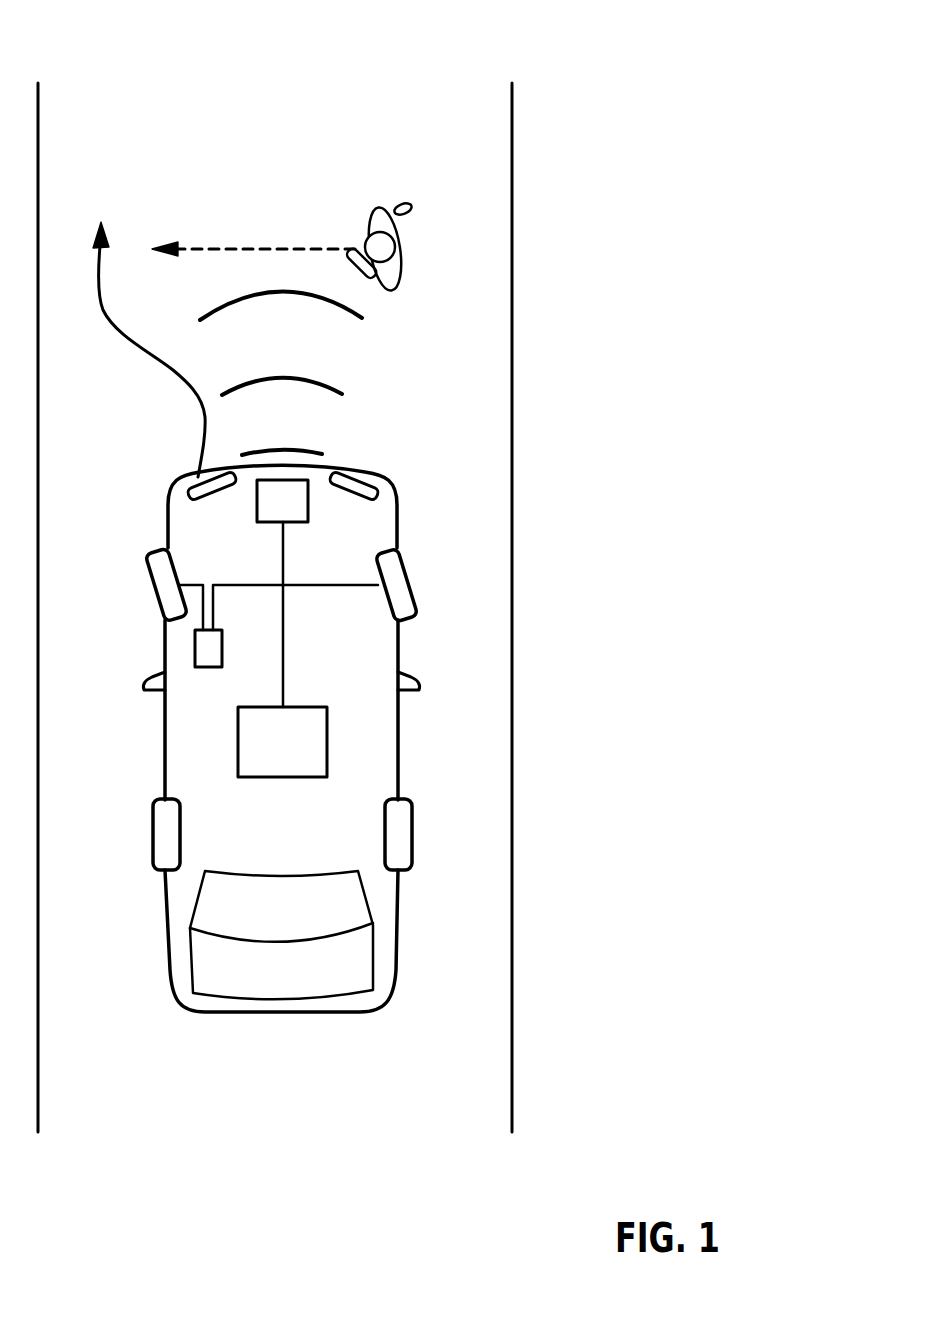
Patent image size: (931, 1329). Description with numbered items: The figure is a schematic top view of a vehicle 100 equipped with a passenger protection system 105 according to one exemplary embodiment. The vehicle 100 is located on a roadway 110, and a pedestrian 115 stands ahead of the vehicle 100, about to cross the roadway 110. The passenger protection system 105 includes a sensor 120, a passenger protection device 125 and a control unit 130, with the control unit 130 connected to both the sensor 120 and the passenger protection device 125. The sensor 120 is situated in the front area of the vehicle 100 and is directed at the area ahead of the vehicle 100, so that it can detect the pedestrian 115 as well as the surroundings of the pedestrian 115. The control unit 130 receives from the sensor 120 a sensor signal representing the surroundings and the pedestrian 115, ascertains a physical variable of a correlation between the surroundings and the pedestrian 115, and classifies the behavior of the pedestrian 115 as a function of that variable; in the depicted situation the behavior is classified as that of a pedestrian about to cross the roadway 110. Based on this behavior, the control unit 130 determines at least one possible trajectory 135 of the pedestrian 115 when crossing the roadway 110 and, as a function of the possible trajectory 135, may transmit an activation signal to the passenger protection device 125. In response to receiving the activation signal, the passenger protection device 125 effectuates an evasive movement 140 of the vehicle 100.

The vehicle 100 is at (399, 898).
The passenger protection system 105 is at (362, 695).
The roadway 110 is at (124, 68).
The pedestrian 115 is at (387, 206).
The sensor 120 is at (309, 519).
The passenger protection device 125 is at (208, 668).
The control unit 130 is at (283, 778).
The possible trajectory 135 is at (249, 249).
The evasive movement 140 is at (143, 358).